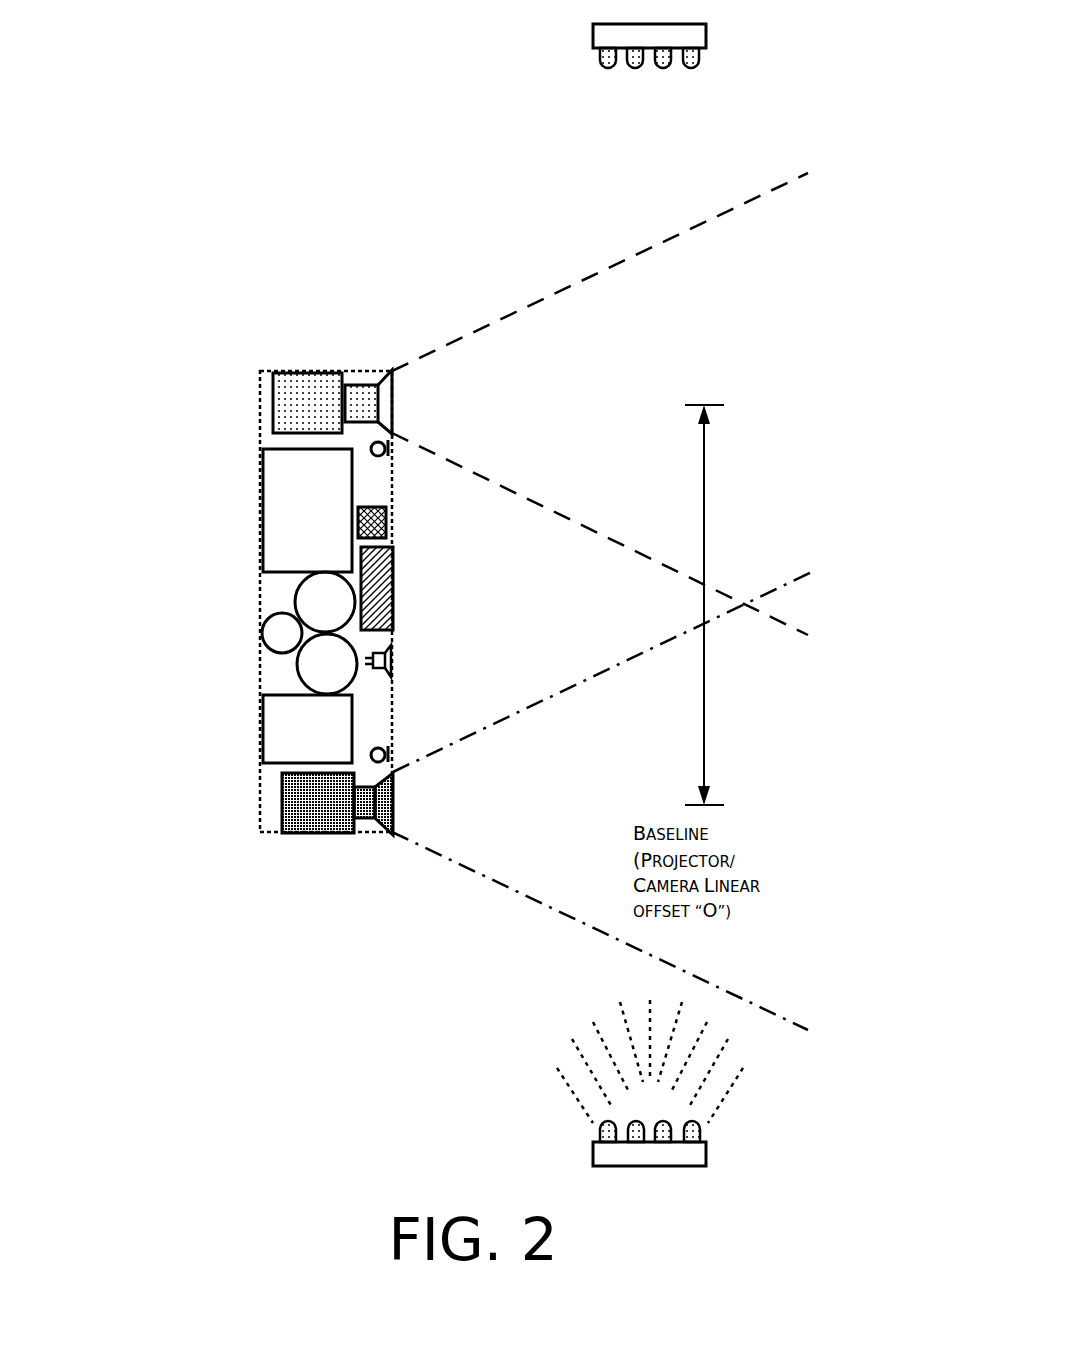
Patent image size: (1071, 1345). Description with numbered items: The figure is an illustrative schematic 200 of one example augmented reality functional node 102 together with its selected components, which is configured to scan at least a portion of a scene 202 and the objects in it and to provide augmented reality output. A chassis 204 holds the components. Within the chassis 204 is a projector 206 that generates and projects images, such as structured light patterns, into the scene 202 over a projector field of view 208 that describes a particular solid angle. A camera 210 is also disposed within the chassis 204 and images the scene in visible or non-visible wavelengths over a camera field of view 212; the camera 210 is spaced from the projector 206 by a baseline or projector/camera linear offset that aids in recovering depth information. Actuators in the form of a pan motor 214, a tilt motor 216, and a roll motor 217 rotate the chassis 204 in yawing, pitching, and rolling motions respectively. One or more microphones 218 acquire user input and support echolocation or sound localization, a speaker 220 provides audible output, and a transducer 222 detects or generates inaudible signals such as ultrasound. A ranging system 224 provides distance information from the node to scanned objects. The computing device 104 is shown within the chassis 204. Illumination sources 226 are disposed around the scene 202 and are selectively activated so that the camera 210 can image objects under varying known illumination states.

The illustrative schematic 200 is at (766, 40).
The augmented reality functional node 102 is at (292, 368).
The computing device 104 is at (308, 510).
The scene 202 is at (633, 672).
The chassis 204 is at (326, 370).
The projector 206 is at (310, 400).
The projector field of view 208 is at (607, 270).
The camera 210 is at (320, 802).
The camera field of view 212 is at (553, 913).
The pan motor 214 is at (297, 603).
The tilt motor 216 is at (303, 680).
The roll motor 217 is at (268, 647).
The microphone 218 is at (390, 441).
The speaker 220 is at (393, 663).
The transducer 222 is at (393, 510).
The ranging system 224 is at (393, 582).
The illumination source 226 is at (618, 1155).